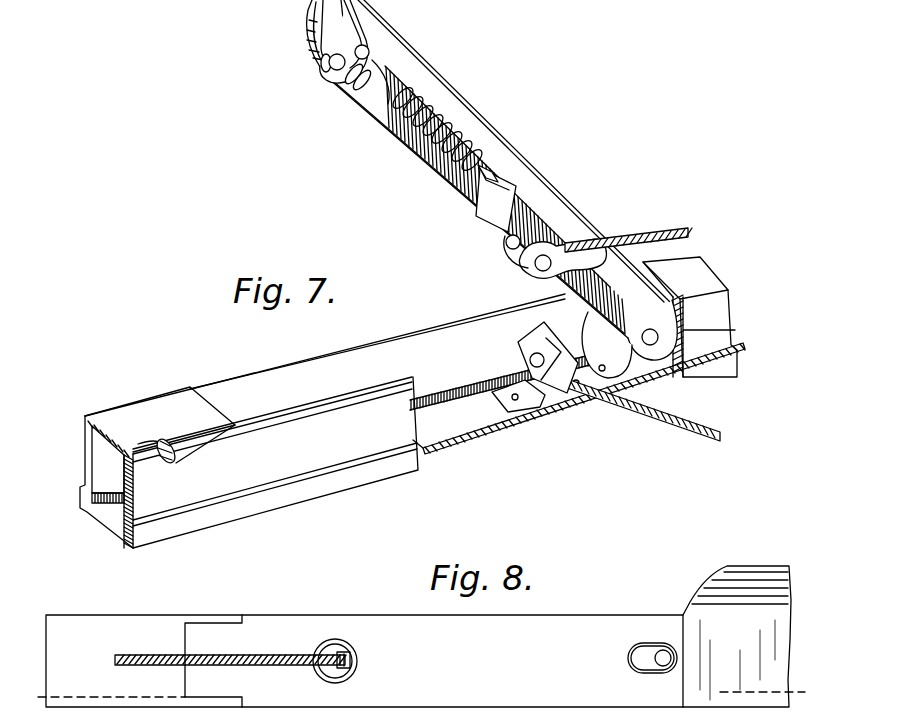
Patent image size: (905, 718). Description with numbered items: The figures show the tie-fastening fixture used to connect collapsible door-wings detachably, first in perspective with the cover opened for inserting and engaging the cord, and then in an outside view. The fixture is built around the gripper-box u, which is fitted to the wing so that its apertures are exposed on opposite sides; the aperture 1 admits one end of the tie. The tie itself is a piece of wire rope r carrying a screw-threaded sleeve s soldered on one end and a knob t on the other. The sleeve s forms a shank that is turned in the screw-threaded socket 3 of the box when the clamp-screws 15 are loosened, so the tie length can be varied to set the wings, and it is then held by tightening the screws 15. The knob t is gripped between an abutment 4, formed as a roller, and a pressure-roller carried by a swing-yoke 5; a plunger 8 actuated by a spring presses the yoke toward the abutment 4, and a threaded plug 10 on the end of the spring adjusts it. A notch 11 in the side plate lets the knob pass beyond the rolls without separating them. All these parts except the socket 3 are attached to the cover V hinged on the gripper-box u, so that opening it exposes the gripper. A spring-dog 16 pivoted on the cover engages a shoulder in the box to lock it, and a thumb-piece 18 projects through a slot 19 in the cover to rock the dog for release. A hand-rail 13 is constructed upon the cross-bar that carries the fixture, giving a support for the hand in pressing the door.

In FIG. 7, the gripper-box u is at (412, 402).
In FIG. 8, the gripper-box u is at (418, 636).
In FIG. 7, the cover V is at (492, 180).
In FIG. 8, the cover V is at (531, 637).
In FIG. 7, the hand-rail 13 is at (185, 460).
In FIG. 8, the hand-rail 13 is at (768, 568).
In FIG. 7, the spring-dog 16 is at (325, 3).
In FIG. 7, the threaded plug 10 is at (320, 70).
In FIG. 7, the swing-yoke 5 is at (490, 213).
In FIG. 7, the plunger 8 is at (484, 178).
In FIG. 8, the plunger 8 is at (421, 696).
In FIG. 7, the knob t is at (505, 248).
In FIG. 7, the notch 11 is at (578, 234).
In FIG. 7, the abutment 4 is at (524, 266).
In FIG. 7, the wire rope r is at (674, 230).
In FIG. 8, the wire rope r is at (283, 648).
In FIG. 7, the screw-threaded socket 3 is at (540, 348).
In FIG. 7, the clamp-screws 15 is at (556, 368).
In FIG. 8, the aperture 1 is at (337, 648).
In FIG. 8, the screw-threaded sleeve s is at (343, 668).
In FIG. 8, the slot 19 is at (636, 650).
In FIG. 8, the thumb-piece 18 is at (668, 658).